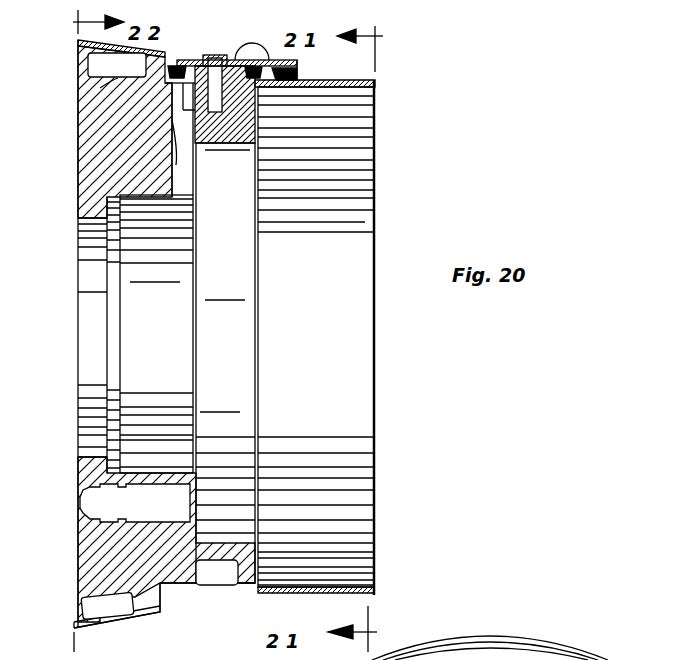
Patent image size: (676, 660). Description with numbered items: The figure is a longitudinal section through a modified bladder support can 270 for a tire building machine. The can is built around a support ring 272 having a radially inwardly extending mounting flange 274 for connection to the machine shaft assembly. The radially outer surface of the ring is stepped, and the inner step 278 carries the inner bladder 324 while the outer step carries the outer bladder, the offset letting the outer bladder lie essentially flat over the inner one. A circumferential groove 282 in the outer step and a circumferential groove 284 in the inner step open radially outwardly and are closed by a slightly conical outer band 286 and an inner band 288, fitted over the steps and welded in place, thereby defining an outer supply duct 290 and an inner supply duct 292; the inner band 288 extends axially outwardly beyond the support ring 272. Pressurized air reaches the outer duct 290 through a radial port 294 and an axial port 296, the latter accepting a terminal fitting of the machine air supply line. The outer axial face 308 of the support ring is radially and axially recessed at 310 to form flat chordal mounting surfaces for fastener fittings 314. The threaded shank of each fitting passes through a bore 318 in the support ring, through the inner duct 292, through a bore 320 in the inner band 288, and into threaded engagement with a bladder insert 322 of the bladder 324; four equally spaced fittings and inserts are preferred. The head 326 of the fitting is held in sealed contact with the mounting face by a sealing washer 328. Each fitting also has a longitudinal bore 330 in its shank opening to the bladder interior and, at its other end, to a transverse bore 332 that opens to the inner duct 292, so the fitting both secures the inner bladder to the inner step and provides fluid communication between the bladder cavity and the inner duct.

The bladder support can 270 is at (377, 206).
The support ring 272 is at (100, 112).
The mounting flange 274 is at (93, 227).
The inner step 278 is at (115, 92).
The circumferential groove 282 is at (100, 76).
The circumferential groove 284 is at (218, 555).
The outer band 286 is at (105, 626).
The inner band 288 is at (369, 93).
The outer supply duct 290 is at (90, 58).
The inner supply duct 292 is at (226, 100).
The radial port 294 is at (92, 540).
The axial port 296 is at (160, 492).
The outer axial face 308 is at (255, 445).
The recess 310 is at (176, 168).
The fastener fitting 314 is at (258, 125).
The bore 318 is at (256, 126).
The bore 320 is at (190, 93).
The bladder insert 322 is at (258, 92).
The bladder 324 is at (299, 74).
The head 326 is at (256, 152).
The sealing washer 328 is at (256, 140).
The longitudinal bore 330 is at (230, 58).
The transverse bore 332 is at (256, 112).